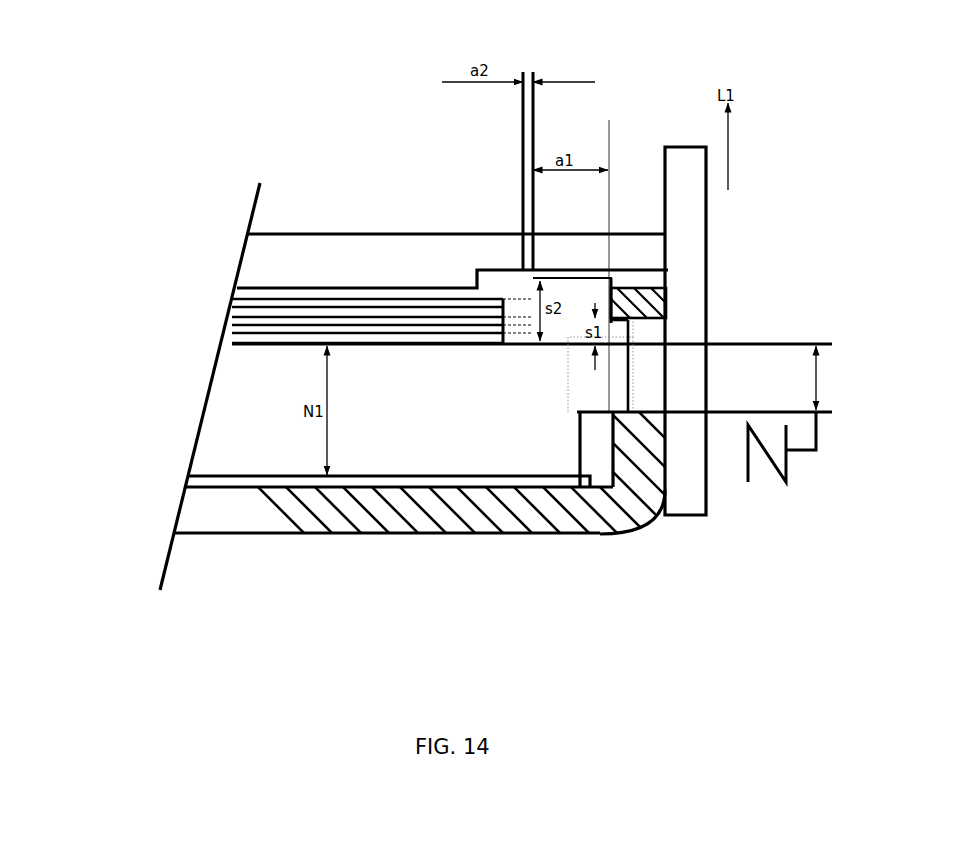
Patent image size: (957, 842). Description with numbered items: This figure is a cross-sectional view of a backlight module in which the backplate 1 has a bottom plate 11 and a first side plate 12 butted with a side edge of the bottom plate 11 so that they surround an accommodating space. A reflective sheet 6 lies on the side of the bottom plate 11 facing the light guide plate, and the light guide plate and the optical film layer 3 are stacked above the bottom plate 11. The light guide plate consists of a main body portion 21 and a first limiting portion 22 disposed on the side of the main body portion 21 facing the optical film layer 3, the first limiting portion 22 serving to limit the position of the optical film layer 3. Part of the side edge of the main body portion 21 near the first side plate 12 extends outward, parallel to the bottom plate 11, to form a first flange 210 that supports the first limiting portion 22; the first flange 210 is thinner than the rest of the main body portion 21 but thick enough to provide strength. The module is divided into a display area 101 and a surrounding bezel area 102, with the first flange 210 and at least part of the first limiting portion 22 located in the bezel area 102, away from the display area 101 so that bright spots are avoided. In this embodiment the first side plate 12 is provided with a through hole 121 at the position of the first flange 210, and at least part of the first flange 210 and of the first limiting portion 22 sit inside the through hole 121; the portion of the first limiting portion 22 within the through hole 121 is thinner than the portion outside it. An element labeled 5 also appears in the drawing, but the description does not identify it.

The backplate 1 is at (423, 536).
The bottom plate 11 is at (512, 520).
The first side plate 12 is at (653, 520).
The through hole 121 is at (642, 380).
The main body portion 21 is at (537, 442).
The first limiting portion 22 is at (585, 300).
The first flange 210 is at (635, 358).
The optical film layer 3 is at (233, 344).
The outer sleeve 5 is at (664, 258).
The reflective sheet 6 is at (188, 487).
The display area 101 is at (518, 73).
The bezel area 102 is at (702, 147).